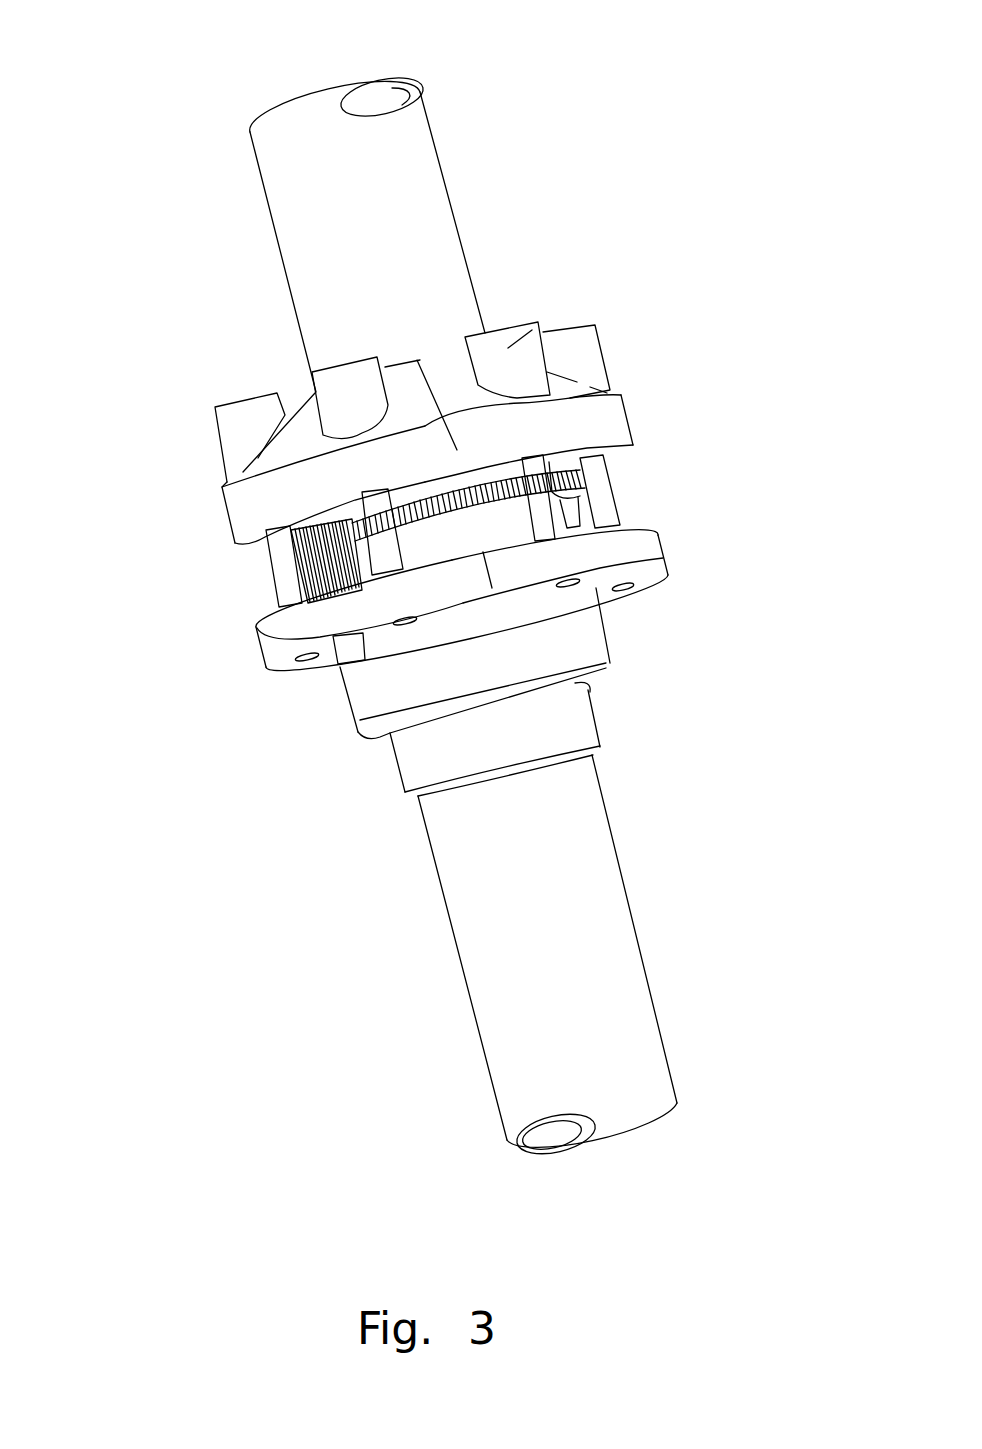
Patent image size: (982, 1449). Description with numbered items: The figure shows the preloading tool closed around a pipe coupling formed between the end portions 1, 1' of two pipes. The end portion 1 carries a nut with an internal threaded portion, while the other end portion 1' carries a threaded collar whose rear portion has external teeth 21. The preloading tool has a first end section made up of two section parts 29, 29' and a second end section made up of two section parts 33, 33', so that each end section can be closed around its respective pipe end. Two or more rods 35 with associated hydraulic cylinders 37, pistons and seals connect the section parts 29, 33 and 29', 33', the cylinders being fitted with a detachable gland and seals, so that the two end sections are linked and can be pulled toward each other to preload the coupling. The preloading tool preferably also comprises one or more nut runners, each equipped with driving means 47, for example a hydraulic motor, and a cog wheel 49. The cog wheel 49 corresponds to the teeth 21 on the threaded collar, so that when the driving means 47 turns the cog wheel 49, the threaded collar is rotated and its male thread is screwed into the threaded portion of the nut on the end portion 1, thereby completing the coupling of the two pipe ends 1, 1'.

The end portion 1 is at (524, 1002).
The end portion 1' is at (305, 231).
The external teeth 21 is at (445, 514).
The section part 29 is at (266, 701).
The section part 29' is at (650, 528).
The section part 33 is at (236, 484).
The section part 33' is at (545, 294).
The rods 35 is at (620, 492).
The hydraulic cylinders 37 is at (525, 322).
The driving means 47 is at (333, 673).
The cog wheel 49 is at (300, 548).